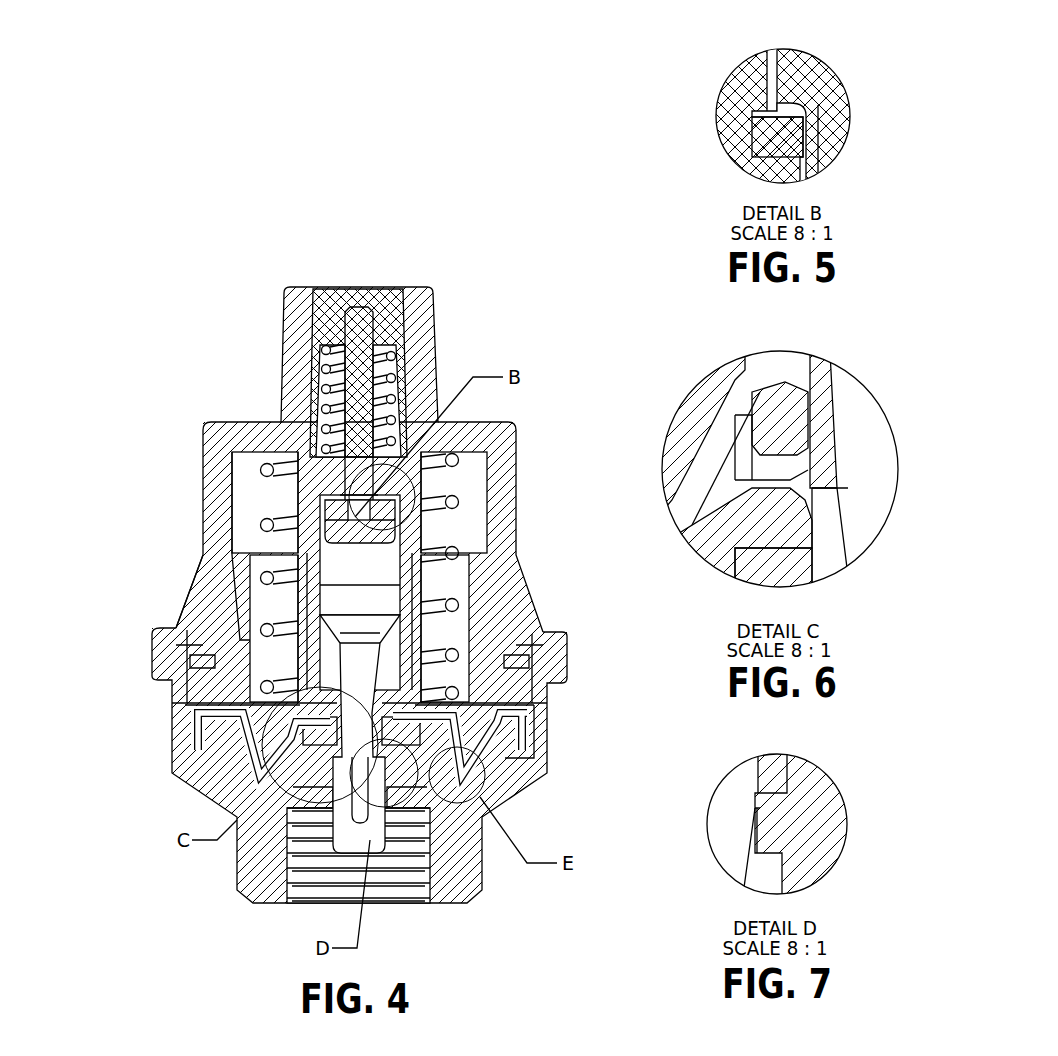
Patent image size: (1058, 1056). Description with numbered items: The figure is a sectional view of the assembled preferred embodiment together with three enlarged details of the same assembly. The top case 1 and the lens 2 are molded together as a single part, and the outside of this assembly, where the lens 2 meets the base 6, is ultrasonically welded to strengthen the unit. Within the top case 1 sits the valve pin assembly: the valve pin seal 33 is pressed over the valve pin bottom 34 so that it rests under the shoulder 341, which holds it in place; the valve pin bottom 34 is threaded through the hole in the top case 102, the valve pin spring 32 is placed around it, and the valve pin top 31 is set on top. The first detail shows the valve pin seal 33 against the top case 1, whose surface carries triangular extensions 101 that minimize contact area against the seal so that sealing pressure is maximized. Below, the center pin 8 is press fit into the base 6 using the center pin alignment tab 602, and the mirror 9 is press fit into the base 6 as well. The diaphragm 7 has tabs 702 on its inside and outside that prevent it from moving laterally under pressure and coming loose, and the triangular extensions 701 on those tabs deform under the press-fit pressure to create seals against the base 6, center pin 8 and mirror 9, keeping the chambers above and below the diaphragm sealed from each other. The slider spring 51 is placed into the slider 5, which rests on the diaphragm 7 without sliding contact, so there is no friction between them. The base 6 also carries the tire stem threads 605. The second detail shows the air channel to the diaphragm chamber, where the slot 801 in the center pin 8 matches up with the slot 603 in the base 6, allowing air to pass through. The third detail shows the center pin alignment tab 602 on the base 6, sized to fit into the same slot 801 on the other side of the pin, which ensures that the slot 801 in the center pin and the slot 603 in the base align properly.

In FIG. 4, the top case 1 is at (237, 438).
In FIG. 4, the lens 2 is at (202, 582).
In FIG. 4, the slider 5 is at (243, 620).
In FIG. 4, the base 6 is at (523, 768).
In FIG. 4, the diaphragm 7 is at (198, 728).
In FIG. 4, the center pin 8 is at (260, 897).
In FIG. 4, the mirror 9 is at (198, 665).
In FIG. 4, the valve pin top 31 is at (393, 300).
In FIG. 4, the valve pin spring 32 is at (393, 377).
In FIG. 4, the valve pin seal 33 is at (385, 512).
In FIG. 5, the valve pin seal 33 is at (783, 137).
In FIG. 4, the valve pin bottom 34 is at (380, 540).
In FIG. 4, the slider spring 51 is at (267, 523).
In FIG. 5, the triangular extensions 101 is at (813, 90).
In FIG. 4, the hole in top case 102 is at (348, 498).
In FIG. 4, the shoulder of valve pin bottom 341 is at (338, 492).
In FIG. 7, the center pin alignment tab 602 is at (772, 822).
In FIG. 6, the slot 603 is at (768, 467).
In FIG. 4, the tire stem threads 605 is at (390, 877).
In FIG. 4, the triangular extensions 701 is at (528, 710).
In FIG. 4, the tabs 702 is at (522, 733).
In FIG. 6, the slot 801 is at (823, 520).
In FIG. 7, the slot 801 is at (758, 868).